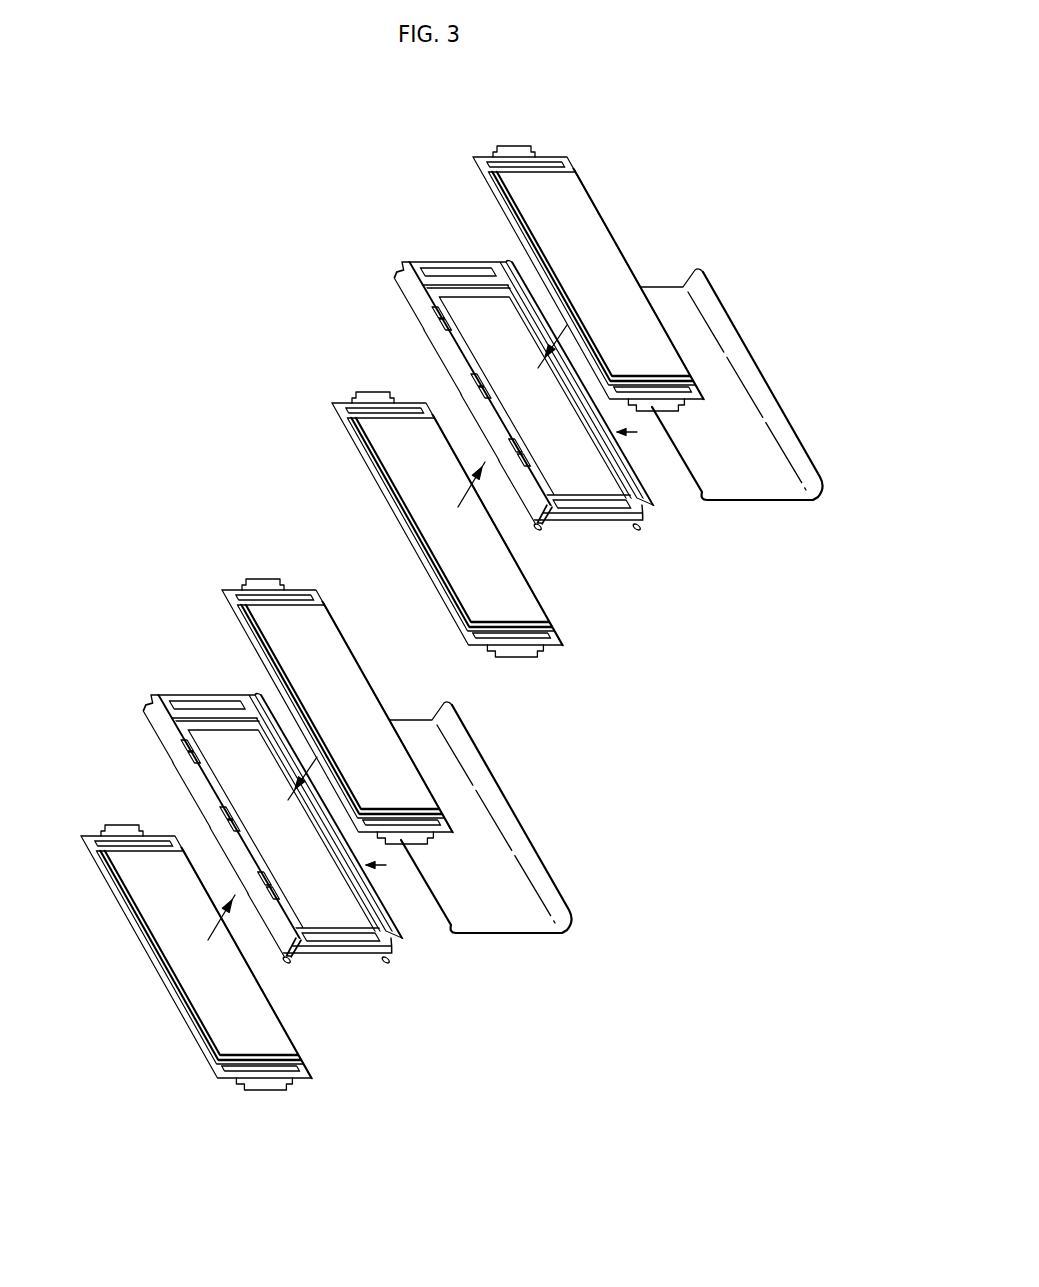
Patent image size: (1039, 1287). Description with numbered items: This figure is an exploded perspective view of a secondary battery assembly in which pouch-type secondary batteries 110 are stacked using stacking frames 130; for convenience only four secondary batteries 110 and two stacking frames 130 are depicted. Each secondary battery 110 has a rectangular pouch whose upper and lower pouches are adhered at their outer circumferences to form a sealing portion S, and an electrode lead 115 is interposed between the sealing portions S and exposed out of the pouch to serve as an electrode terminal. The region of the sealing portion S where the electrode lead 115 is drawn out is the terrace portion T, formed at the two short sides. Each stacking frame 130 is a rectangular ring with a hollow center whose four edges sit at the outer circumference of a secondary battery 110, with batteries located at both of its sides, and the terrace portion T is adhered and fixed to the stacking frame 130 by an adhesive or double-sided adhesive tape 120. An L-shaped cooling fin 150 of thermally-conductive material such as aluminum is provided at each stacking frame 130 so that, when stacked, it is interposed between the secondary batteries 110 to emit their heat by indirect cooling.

The secondary battery 110 is at (199, 995).
The electrode lead 115 is at (421, 838).
The double-sided adhesive tape 120 is at (234, 1073).
The stacking frame 130 is at (189, 770).
The cooling fin 150 is at (487, 933).
The sealing portion S is at (205, 1047).
The terrace portion T is at (300, 1066).